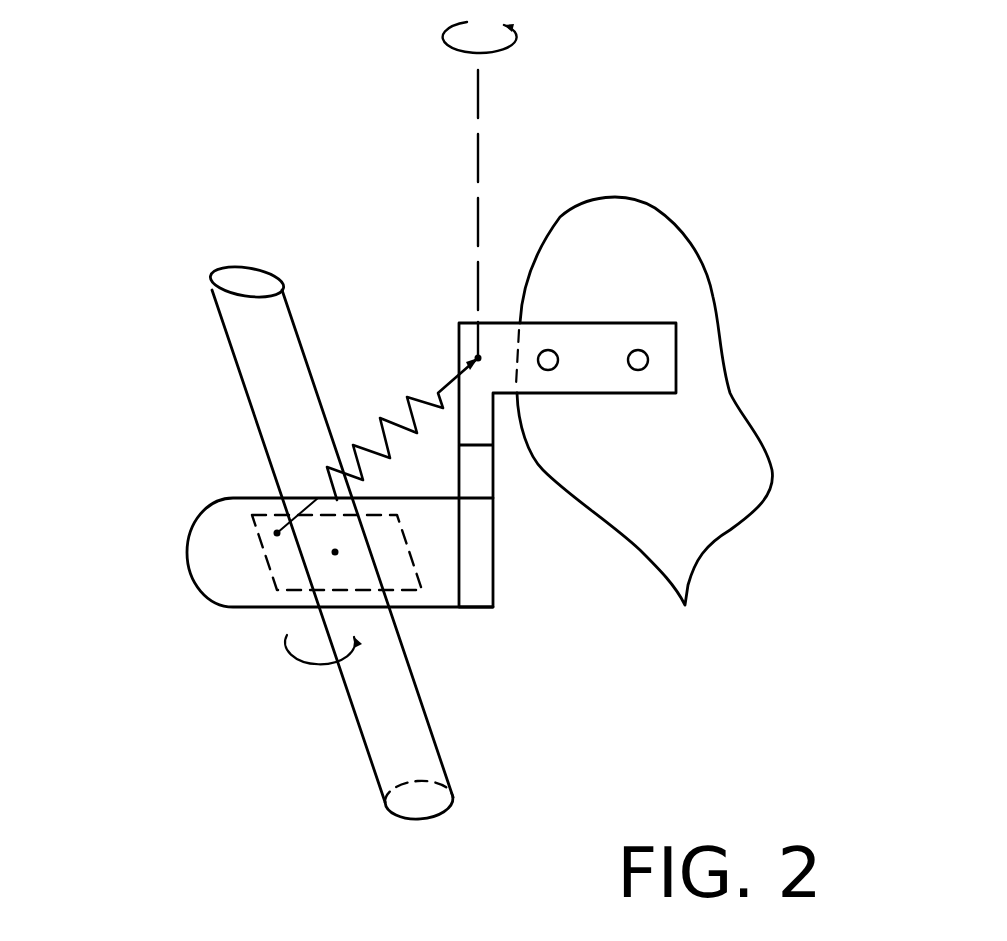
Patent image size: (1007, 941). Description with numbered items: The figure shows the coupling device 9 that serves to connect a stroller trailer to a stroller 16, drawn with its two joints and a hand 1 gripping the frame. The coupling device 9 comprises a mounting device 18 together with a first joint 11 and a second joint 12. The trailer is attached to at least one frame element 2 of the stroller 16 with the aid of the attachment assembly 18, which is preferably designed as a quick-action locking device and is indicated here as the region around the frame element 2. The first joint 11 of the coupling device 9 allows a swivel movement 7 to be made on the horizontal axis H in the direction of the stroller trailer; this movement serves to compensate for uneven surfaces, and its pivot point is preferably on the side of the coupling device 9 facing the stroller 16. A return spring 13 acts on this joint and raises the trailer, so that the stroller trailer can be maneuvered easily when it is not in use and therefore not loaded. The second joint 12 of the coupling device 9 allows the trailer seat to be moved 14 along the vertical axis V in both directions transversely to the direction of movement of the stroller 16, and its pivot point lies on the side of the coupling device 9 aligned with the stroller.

The hand 1 is at (737, 453).
The frame element 2 is at (292, 465).
The swivel movement 7 is at (333, 658).
The coupling device 9 is at (603, 287).
The first joint 11 is at (335, 553).
The second joint 12 is at (477, 445).
The return spring 13 is at (277, 533).
The movement along vertical axis 14 is at (508, 181).
The stroller 16 is at (263, 350).
The mounting device 18 is at (277, 590).